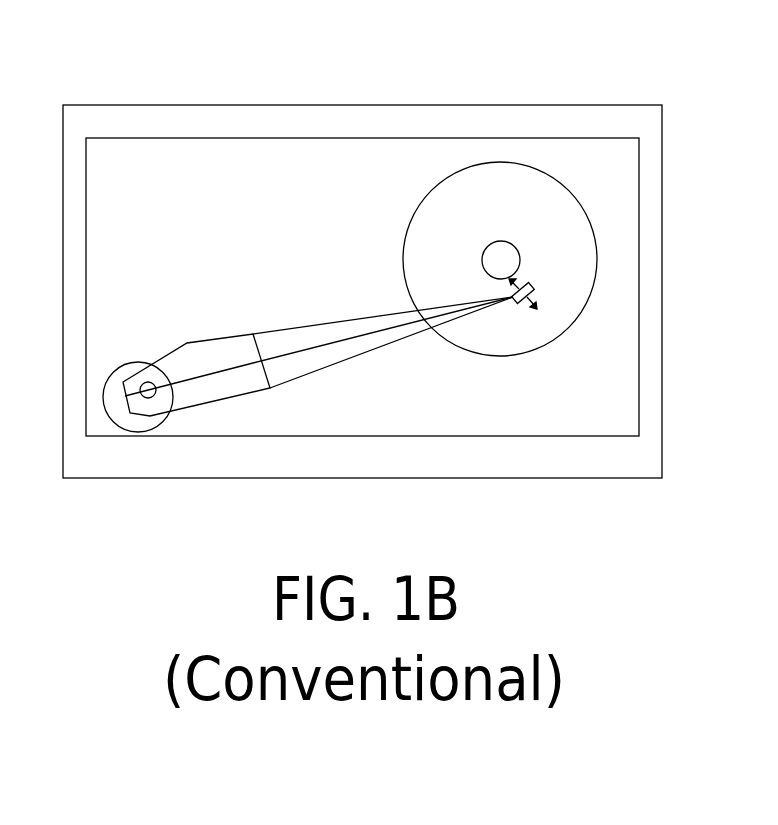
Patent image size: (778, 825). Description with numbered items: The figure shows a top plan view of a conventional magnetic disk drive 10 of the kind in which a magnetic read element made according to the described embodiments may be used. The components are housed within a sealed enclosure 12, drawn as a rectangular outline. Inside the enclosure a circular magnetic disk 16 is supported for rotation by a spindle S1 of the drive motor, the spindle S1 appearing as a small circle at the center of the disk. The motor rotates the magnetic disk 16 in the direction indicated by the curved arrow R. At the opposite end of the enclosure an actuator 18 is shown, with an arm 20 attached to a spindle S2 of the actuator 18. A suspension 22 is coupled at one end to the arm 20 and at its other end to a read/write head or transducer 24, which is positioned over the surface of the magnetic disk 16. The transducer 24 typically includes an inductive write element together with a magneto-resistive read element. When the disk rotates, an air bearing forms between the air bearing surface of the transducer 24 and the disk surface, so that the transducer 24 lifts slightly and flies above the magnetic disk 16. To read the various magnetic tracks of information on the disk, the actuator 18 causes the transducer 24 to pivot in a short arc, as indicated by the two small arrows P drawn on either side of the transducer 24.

The magnetic disk drive 10 is at (428, 95).
The sealed enclosure 12 is at (405, 460).
The magnetic disk 16 is at (461, 228).
The actuator 18 is at (125, 370).
The arm 20 is at (200, 347).
The suspension 22 is at (320, 358).
The transducer 24 is at (531, 286).
The spindle of motor S1 is at (502, 248).
The spindle of actuator S2 is at (156, 393).
The arrows indicating transducer pivoting P is at (526, 293).
The arrow indicating disk rotation R is at (615, 255).